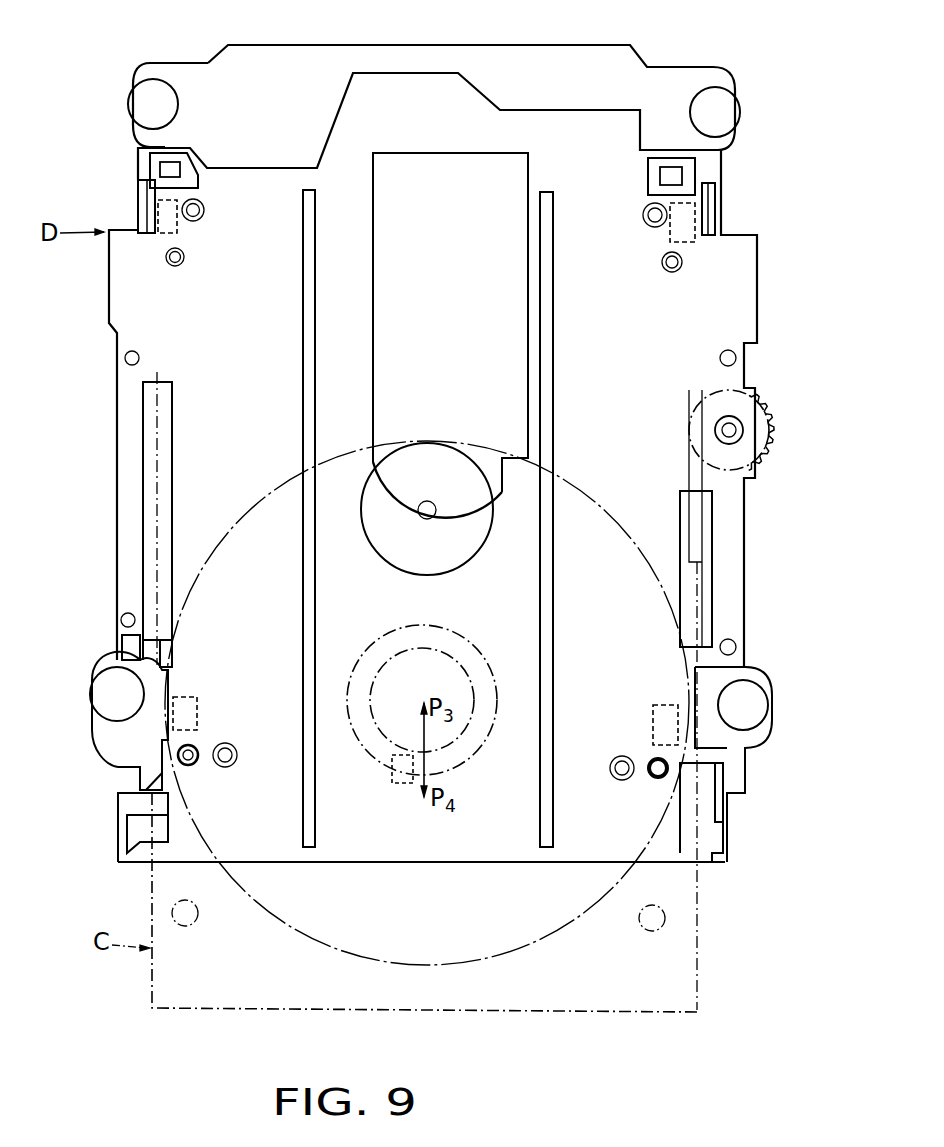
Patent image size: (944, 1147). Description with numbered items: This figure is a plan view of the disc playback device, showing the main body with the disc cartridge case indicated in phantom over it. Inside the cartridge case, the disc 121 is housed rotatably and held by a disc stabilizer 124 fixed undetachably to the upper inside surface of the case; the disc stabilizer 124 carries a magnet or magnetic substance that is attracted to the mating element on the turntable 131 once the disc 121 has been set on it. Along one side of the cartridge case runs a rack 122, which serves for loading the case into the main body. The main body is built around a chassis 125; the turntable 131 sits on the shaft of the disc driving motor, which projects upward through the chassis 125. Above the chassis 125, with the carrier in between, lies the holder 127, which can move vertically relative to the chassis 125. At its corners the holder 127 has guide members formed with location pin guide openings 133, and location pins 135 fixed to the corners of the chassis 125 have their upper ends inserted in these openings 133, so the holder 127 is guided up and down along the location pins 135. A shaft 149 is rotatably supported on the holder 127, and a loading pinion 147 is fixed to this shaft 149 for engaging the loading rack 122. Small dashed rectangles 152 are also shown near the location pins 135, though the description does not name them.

The disc 121 is at (490, 958).
The rack 122 is at (690, 505).
The disc stabilizer 124 is at (480, 650).
The chassis 125 is at (583, 47).
The holder 127 is at (757, 301).
The turntable 131 is at (455, 465).
The location pin guide openings 133 is at (178, 268).
The location pins 135 is at (186, 256).
The loading pinion 147 is at (770, 432).
The shaft 149 is at (742, 428).
The detection switch 152 is at (177, 231).